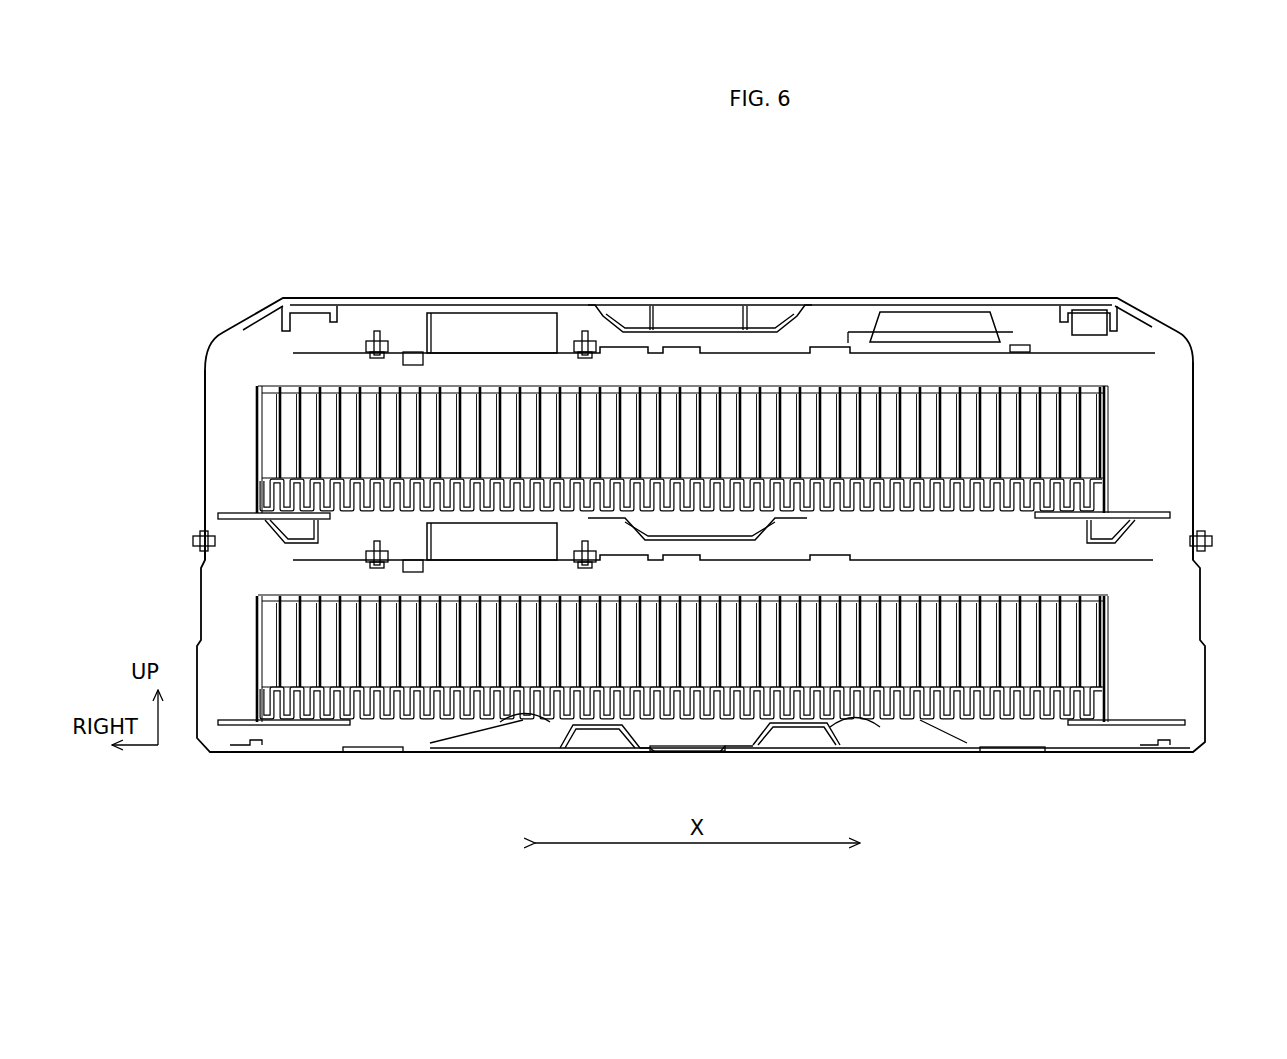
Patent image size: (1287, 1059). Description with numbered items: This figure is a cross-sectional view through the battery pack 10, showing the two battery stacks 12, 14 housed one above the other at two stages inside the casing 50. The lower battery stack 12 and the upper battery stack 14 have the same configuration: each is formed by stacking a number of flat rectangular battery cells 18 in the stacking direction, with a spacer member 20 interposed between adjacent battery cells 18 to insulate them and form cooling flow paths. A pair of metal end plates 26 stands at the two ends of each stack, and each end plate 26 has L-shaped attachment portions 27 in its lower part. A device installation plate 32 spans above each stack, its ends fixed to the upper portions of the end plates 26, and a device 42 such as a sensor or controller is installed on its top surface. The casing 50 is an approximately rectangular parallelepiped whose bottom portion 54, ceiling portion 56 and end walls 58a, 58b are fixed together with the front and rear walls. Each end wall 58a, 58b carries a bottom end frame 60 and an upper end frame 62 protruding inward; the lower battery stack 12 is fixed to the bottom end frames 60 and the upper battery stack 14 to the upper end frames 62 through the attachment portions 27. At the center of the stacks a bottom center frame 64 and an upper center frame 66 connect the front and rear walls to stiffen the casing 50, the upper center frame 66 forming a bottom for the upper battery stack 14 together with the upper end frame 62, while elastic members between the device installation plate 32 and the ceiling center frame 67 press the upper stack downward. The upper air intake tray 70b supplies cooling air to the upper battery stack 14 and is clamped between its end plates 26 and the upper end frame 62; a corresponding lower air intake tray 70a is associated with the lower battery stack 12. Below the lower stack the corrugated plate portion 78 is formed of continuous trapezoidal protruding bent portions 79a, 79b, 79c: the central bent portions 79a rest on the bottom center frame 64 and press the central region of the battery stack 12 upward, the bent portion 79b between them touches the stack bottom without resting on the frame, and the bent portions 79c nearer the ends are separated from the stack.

The battery pack 10 is at (1020, 268).
The battery stack 12 is at (1085, 574).
The battery stack 14 is at (1085, 360).
The battery cell 18 is at (930, 395).
The spacer member 20 is at (878, 395).
The end plate 26 is at (252, 422).
The attachment portion 27 is at (240, 512).
The device installation plate 32 is at (827, 347).
The device 42 is at (443, 312).
The casing 50 is at (913, 296).
The bottom portion 54 is at (495, 756).
The ceiling portion 56 is at (512, 310).
The end wall 58a is at (203, 430).
The end wall 58b is at (1200, 440).
The bottom end frame 60 is at (300, 735).
The upper end frame 62 is at (210, 543).
The bottom center frame 64 is at (760, 742).
The upper center frame 66 is at (800, 532).
The ceiling center frame 67 is at (705, 336).
The lower terminal tail row 70a is at (1090, 700).
The upper air intake tray 70b is at (1090, 490).
The corrugated plate portion 78 is at (915, 722).
The protruding bent portion 79a is at (560, 726).
The protruding bent portion 79b is at (705, 723).
The protruding bent portion 79c is at (380, 722).